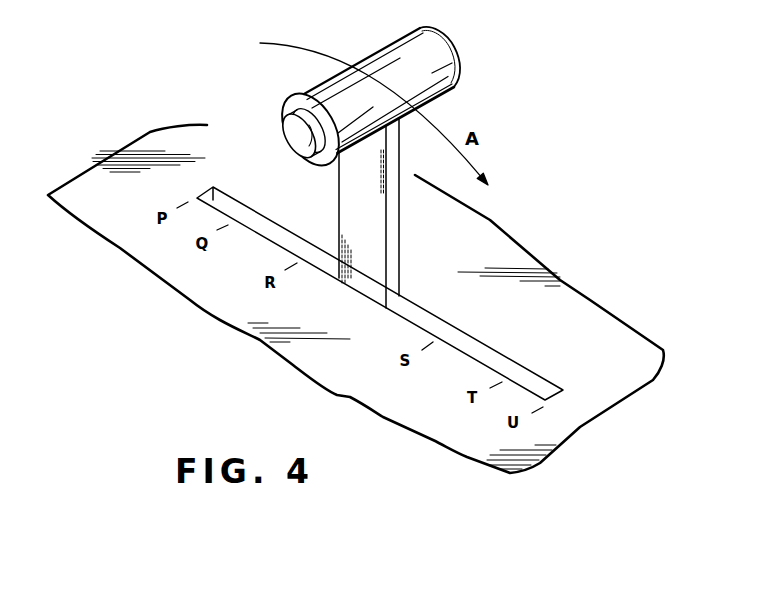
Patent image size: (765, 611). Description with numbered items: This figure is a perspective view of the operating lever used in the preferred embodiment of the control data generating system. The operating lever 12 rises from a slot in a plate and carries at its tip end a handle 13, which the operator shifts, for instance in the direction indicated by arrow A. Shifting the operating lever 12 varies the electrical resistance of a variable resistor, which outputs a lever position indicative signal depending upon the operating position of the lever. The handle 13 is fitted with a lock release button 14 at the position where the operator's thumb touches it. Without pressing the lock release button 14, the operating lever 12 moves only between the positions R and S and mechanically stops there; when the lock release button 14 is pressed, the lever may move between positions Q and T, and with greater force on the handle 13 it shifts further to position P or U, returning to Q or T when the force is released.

The operating lever 12 is at (383, 237).
The handle 13 is at (457, 67).
The lock release button 14 is at (287, 129).